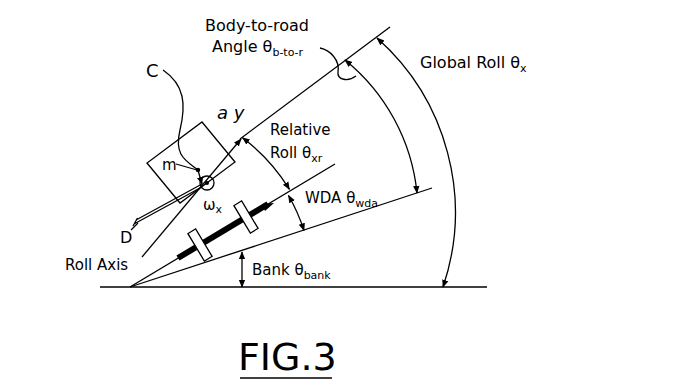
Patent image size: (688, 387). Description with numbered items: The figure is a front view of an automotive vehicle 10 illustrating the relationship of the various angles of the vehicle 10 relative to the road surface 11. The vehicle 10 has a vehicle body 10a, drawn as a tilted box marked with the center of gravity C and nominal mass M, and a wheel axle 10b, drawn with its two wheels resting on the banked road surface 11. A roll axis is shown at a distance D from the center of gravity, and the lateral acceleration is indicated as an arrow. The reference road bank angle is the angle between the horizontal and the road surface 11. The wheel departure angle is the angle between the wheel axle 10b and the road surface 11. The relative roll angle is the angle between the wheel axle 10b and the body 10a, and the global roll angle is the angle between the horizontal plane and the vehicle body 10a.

The vehicle 10 is at (107, 173).
The vehicle body 10a is at (160, 155).
The wheel axle 10b is at (245, 219).
The road surface 11 is at (343, 220).